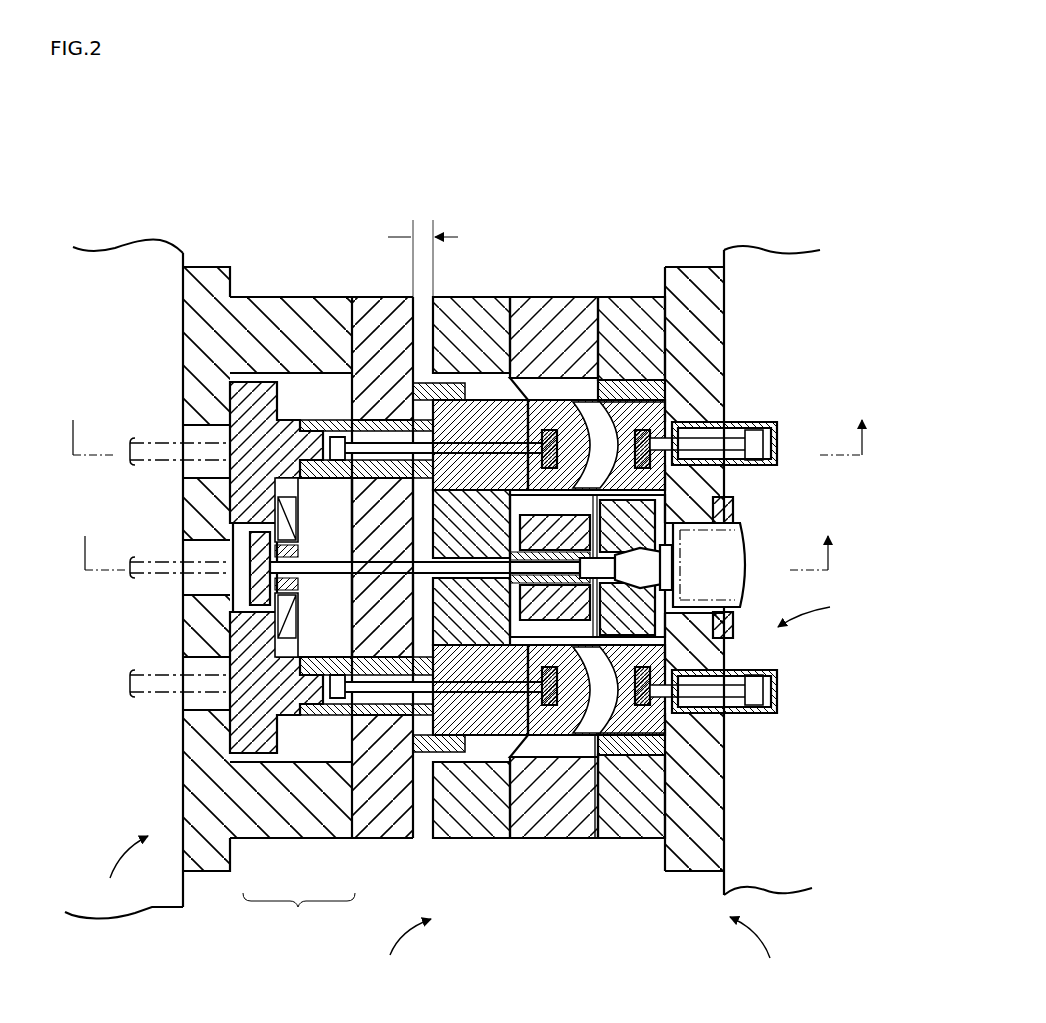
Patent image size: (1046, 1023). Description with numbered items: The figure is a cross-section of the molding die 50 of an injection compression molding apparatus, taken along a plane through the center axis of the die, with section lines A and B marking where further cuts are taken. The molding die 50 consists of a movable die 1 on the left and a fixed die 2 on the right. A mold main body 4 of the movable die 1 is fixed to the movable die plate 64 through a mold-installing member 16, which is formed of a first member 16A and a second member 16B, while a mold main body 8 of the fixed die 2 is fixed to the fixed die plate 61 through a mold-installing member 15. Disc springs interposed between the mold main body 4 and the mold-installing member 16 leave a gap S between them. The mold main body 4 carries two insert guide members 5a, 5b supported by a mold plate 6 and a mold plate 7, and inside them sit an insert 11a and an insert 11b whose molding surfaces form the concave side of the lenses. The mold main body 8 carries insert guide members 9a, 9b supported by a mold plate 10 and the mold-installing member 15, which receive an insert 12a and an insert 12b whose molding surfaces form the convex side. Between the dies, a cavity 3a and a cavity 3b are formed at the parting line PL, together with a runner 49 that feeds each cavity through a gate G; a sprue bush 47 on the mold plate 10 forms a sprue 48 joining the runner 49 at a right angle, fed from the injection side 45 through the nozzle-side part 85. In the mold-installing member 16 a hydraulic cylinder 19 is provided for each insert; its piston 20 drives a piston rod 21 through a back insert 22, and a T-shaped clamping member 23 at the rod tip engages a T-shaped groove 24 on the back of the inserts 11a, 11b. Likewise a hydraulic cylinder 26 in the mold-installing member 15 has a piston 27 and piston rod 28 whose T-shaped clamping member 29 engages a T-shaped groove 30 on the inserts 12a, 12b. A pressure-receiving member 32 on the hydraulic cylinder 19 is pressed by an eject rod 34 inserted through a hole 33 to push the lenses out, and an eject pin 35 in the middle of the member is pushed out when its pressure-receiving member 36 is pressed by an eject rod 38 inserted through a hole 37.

The movable die 1 is at (398, 950).
The fixed die 2 is at (763, 949).
The cavity 3a is at (672, 405).
The cavity 3b is at (672, 740).
The mold main body 4 is at (525, 800).
The insert guide member 5a is at (545, 320).
The insert guide member 5b is at (540, 770).
The mold plate 6 is at (565, 800).
The mold plate 7 is at (448, 820).
The mold main body 8 is at (655, 810).
The insert guide member 9a is at (655, 330).
The insert guide member 9b is at (645, 770).
The mold plate 10 is at (625, 800).
The insert 11a is at (560, 390).
The insert 11b is at (578, 760).
The insert 12a is at (630, 385).
The insert 12b is at (620, 760).
The mold-installing member 15 is at (725, 832).
The mold-installing member 16 is at (299, 915).
The first member 16A is at (290, 820).
The second member 16B is at (380, 800).
The hydraulic cylinder 19 is at (356, 482).
The piston 20 is at (340, 422).
The piston rod 21 is at (360, 440).
The back insert 22 is at (462, 383).
The T-shaped clamping member 23 is at (495, 405).
The T-shaped groove 24 is at (575, 455).
The hydraulic cylinder 26 is at (778, 440).
The piston 27 is at (762, 452).
The piston rod 28 is at (740, 467).
The T-shaped clamping member 29 is at (668, 397).
The T-shaped groove 30 is at (578, 425).
The pressure-receiving member 32 is at (235, 390).
The hole 33 is at (210, 428).
The eject rod 34 is at (130, 443).
The eject pin 35 is at (300, 565).
The pressure-receiving member 36 is at (252, 540).
The hole 37 is at (200, 594).
The eject rod 38 is at (130, 574).
The injection unit 45 is at (824, 607).
The sprue bush 47 is at (665, 560).
The sprue 48 is at (668, 585).
The runner 49 is at (728, 500).
The molding die 50 is at (113, 869).
The fixed die plate 61 is at (724, 250).
The movable die plate 64 is at (190, 264).
The injection cylinder 85 is at (748, 525).
The gap S is at (423, 249).
The gate G is at (512, 520).
The parting line PL is at (595, 838).
The line A- A is at (467, 424).
The line B- B is at (456, 540).